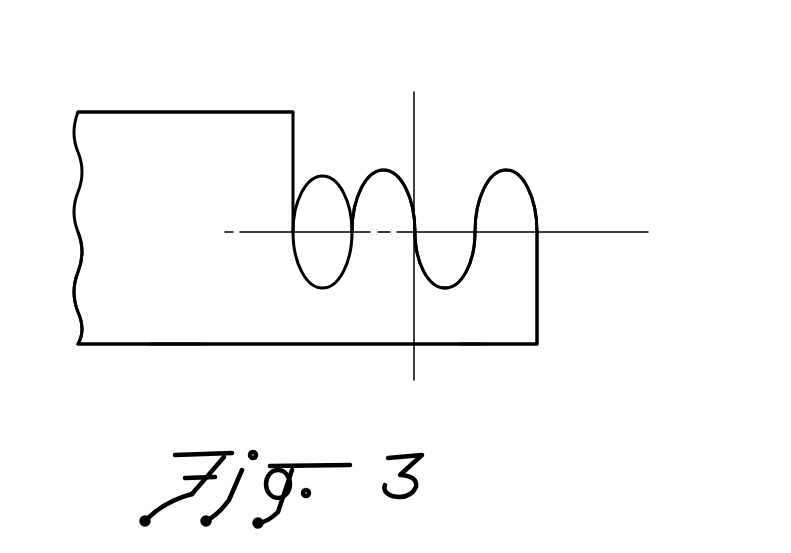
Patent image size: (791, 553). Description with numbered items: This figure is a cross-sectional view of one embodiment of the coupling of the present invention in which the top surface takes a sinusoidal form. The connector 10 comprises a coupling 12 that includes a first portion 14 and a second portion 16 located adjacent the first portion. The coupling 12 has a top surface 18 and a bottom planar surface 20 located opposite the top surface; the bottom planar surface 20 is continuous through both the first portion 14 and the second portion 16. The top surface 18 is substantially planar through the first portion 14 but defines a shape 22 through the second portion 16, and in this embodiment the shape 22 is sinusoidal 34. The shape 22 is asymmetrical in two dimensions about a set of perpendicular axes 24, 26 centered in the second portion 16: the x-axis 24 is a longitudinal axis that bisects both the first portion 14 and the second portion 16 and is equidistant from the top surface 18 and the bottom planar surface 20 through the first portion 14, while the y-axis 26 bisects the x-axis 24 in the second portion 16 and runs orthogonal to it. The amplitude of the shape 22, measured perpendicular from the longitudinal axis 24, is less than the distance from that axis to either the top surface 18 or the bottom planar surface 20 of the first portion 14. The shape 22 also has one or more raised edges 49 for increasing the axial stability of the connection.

The connector 10 is at (193, 96).
The coupling 12 is at (127, 110).
The first portion 14 is at (149, 332).
The second portion 16 is at (497, 330).
The top surface 18 is at (381, 171).
The bottom planar surface 20 is at (233, 346).
The shape 22 is at (467, 216).
The x-axis 24 is at (432, 233).
The y-axis 26 is at (413, 241).
The sinusoidal shape 34 is at (529, 182).
The raised edge 49 is at (352, 220).